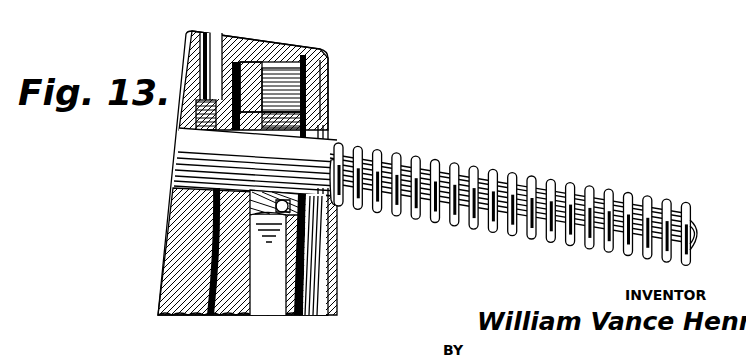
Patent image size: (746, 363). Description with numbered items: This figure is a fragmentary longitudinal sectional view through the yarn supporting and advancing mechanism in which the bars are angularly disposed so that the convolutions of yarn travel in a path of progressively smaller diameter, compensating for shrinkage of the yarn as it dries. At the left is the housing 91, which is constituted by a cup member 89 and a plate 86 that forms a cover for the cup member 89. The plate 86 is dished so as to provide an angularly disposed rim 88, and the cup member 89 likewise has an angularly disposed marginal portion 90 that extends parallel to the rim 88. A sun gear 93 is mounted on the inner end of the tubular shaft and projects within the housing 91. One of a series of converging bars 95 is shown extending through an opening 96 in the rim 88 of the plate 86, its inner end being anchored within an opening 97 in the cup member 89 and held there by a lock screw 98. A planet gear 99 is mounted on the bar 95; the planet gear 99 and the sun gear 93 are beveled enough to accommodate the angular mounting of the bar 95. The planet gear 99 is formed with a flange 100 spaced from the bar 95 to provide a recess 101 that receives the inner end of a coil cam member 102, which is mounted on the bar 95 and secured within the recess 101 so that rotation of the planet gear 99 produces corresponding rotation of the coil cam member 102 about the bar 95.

The plate 86 is at (292, 268).
The rim 88 is at (324, 78).
The cup member 89 is at (166, 278).
The marginal portion 90 is at (168, 192).
The housing 91 is at (254, 34).
The sun gear 93 is at (238, 310).
The converging bars 95 is at (655, 204).
The openings 96 is at (324, 124).
The openings 97 is at (181, 134).
The lock screws 98 is at (183, 93).
The planet gears 99 is at (254, 90).
The flange 100 is at (264, 210).
The recess 101 is at (287, 198).
The coil cam member 102 is at (531, 178).